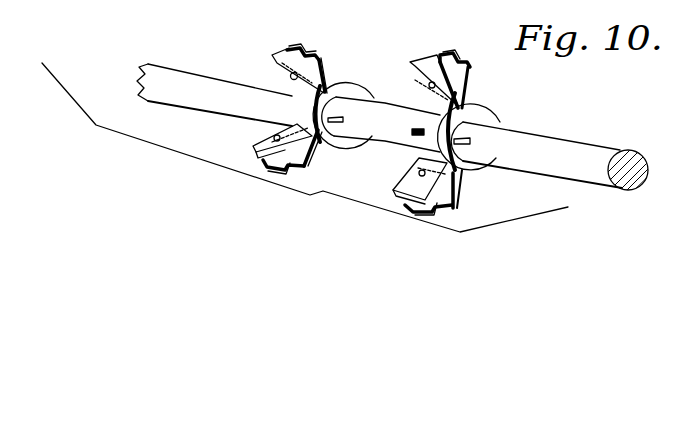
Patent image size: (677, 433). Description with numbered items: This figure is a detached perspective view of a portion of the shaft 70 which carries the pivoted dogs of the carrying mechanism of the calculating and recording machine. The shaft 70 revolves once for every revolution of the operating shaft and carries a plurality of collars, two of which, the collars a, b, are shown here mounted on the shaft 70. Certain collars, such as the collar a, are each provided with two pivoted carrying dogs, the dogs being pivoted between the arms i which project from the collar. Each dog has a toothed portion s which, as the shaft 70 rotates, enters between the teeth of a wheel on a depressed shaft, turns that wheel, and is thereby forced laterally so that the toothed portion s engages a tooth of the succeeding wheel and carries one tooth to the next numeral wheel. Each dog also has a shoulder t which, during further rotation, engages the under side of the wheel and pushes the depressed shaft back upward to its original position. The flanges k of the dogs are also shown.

The shaft 70 is at (593, 150).
The collar a is at (493, 110).
The collar b is at (360, 90).
The flange k is at (327, 68).
The arms i is at (272, 63).
The toothed portion s is at (297, 50).
The shoulder t is at (322, 55).